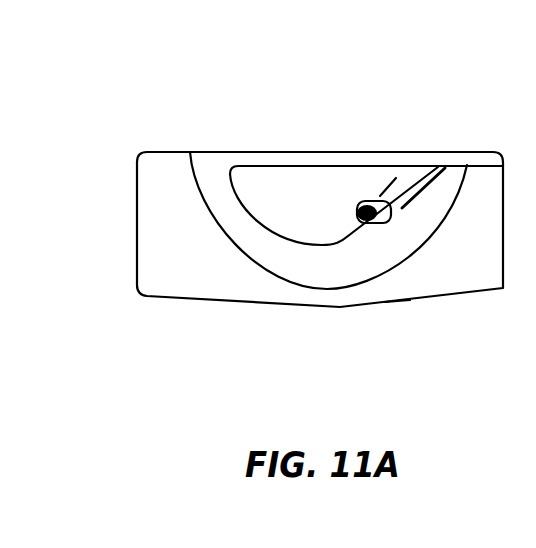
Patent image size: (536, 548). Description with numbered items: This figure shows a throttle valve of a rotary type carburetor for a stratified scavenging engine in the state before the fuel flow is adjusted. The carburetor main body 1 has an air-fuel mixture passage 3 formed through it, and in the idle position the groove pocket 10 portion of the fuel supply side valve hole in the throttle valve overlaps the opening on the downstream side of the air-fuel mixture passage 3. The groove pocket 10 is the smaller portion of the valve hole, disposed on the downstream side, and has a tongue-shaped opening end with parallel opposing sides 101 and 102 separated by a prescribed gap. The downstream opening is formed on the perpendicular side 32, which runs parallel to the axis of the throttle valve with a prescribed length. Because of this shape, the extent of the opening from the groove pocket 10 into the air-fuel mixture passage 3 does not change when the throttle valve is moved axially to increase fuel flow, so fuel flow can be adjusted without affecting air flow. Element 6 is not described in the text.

The carburetor main body 1 is at (135, 188).
The air-fuel mixture passage 3 is at (503, 166).
The inner cavity 6 is at (303, 180).
The groove pocket 10 is at (350, 236).
The perpendicular side 32 is at (378, 201).
The side 101 is at (379, 203).
The side 102 is at (397, 152).